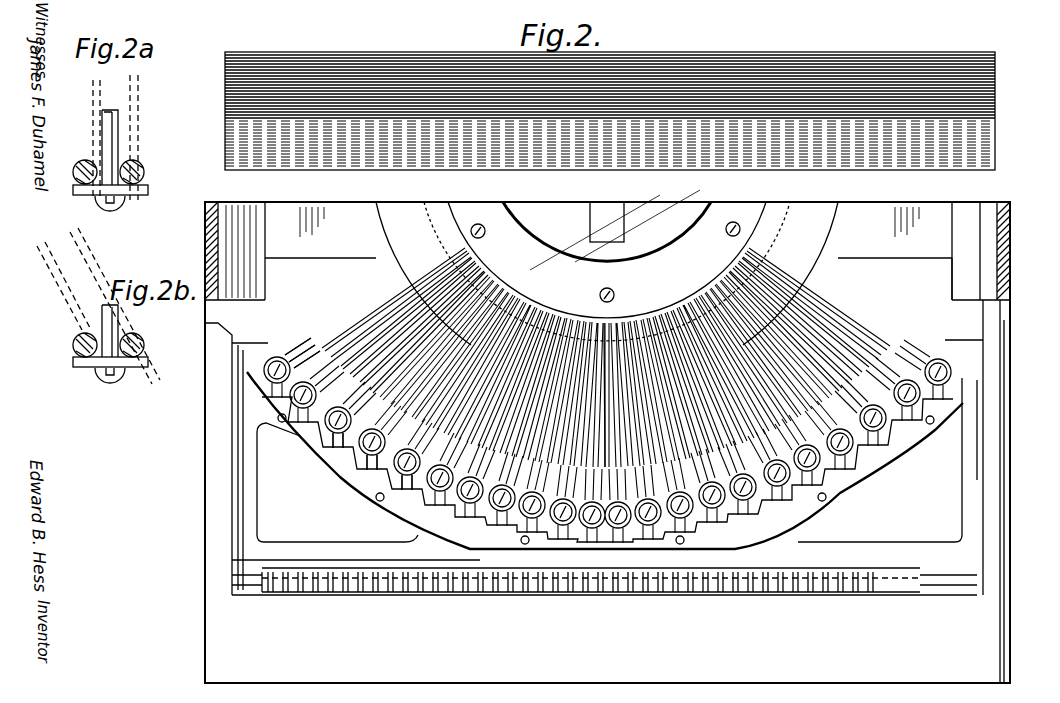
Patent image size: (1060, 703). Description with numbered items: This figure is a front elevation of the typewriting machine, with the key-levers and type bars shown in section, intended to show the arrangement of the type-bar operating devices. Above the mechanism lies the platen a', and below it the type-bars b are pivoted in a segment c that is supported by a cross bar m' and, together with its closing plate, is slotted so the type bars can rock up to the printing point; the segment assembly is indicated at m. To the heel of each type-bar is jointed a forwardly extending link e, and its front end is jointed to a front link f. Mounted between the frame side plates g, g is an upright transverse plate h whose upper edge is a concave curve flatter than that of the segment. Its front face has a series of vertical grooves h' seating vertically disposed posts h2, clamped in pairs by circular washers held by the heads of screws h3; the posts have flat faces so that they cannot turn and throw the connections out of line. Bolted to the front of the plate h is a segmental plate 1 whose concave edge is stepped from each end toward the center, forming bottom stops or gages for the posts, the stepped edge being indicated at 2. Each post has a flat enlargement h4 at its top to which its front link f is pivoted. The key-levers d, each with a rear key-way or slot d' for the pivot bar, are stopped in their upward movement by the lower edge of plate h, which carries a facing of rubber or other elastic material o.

In FIG. 2, the platen a' is at (610, 123).
In FIG. 2, the type-bar segment c is at (608, 232).
In FIG. 2, the cross bar m' is at (932, 264).
In FIG. 2, the type-bar segment m is at (607, 265).
In FIG. 2, the type-bars b is at (810, 270).
In FIG. 2, the front link f is at (356, 330).
In FIG. 2A, the front link f is at (92, 104).
In FIG. 2B, the front link f is at (46, 270).
In FIG. 2, the link e is at (611, 395).
In FIG. 2, the frame side plates g is at (205, 405).
In FIG. 2, the upright transverse plate h is at (606, 442).
In FIG. 2, the vertical grooves h' is at (619, 494).
In FIG. 2, the posts h2 is at (364, 480).
In FIG. 2A, the posts h2 is at (144, 166).
In FIG. 2B, the posts h2 is at (76, 352).
In FIG. 2, the screws h3 is at (320, 438).
In FIG. 2A, the screws h3 is at (100, 204).
In FIG. 2B, the screws h3 is at (108, 376).
In FIG. 2, the flat enlargement h4 is at (284, 332).
In FIG. 2A, the flat enlargement h4 is at (84, 160).
In FIG. 2B, the flat enlargement h4 is at (70, 323).
In FIG. 2, the segmental plate 1 is at (760, 522).
In FIG. 2, the hanger plate edge 2 is at (446, 505).
In FIG. 2, the key-levers d is at (591, 593).
In FIG. 2, the key-way or slot d' is at (295, 596).
In FIG. 2, the facing of elastic material o is at (966, 585).